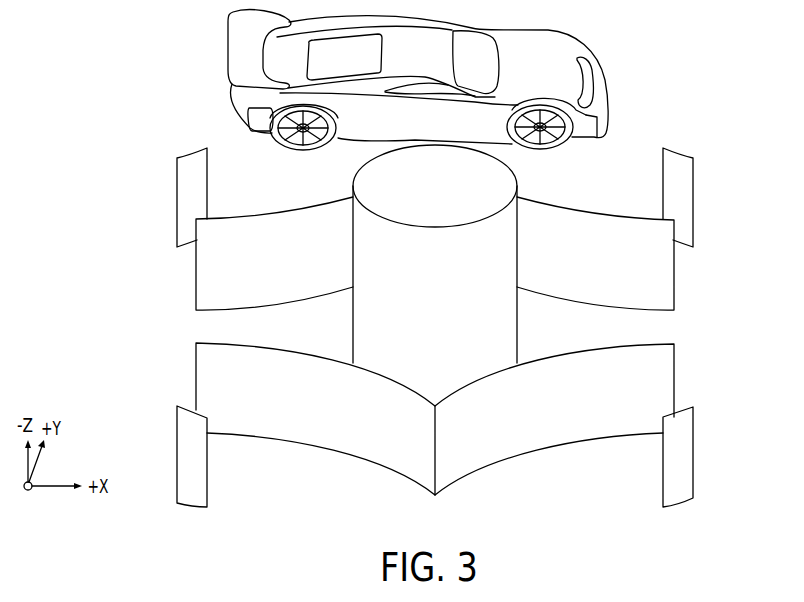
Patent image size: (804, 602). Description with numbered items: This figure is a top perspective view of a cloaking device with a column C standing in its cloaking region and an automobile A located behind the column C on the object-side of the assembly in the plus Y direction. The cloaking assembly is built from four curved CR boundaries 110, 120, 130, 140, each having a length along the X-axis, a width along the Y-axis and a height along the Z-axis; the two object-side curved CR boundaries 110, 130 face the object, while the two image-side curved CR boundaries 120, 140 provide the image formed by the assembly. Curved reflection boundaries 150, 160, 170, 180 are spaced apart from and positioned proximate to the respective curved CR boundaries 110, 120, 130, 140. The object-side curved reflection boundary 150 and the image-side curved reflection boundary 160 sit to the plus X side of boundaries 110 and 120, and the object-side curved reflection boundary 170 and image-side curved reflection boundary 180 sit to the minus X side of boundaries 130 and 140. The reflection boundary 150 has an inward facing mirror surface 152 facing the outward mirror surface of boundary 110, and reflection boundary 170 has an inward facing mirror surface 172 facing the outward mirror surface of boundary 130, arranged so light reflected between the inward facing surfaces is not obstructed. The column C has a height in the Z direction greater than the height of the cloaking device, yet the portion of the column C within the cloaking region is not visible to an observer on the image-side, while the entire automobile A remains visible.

The automobile A is at (531, 76).
The column C is at (428, 282).
The object-side curved CR boundary 110 is at (550, 268).
The image-side curved CR boundary 120 is at (549, 423).
The object-side curved CR boundary 130 is at (282, 268).
The image-side curved CR boundary 140 is at (282, 423).
The object-side curved reflection boundary 150 is at (703, 158).
The inward facing mirror surface 152 is at (682, 184).
The image-side curved reflection boundary 160 is at (699, 448).
The object-side curved reflection boundary 170 is at (167, 158).
The inward facing mirror surface 172 is at (188, 184).
The image-side curved reflection boundary 180 is at (172, 448).